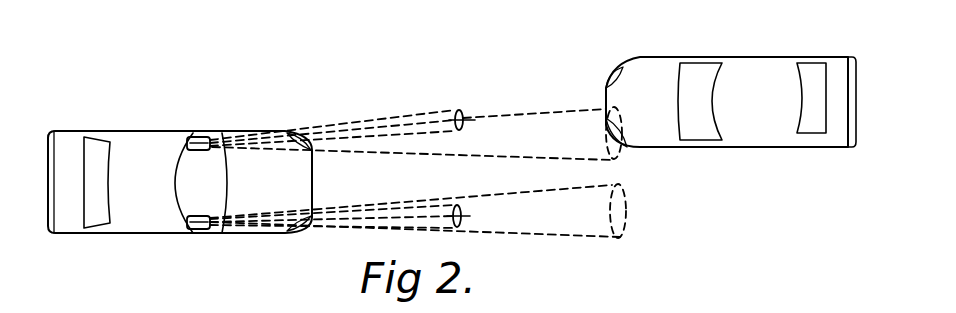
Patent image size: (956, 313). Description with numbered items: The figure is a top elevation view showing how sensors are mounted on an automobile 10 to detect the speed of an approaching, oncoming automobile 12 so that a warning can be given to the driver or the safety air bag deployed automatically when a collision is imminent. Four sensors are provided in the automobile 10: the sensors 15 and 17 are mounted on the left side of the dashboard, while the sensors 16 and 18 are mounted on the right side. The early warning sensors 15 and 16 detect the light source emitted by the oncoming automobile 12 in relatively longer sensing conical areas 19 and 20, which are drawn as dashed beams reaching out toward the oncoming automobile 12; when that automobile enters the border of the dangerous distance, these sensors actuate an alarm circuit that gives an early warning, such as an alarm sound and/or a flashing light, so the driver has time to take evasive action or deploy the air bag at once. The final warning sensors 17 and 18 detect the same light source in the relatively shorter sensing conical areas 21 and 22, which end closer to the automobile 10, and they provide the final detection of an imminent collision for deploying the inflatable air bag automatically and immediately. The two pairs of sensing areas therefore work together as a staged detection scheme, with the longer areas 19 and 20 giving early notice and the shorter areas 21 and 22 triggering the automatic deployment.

The automobile 10 is at (131, 142).
The oncoming automobile 12 is at (741, 58).
The early warning sensor 15 is at (188, 141).
The early warning sensor 16 is at (186, 229).
The final warning sensor 17 is at (194, 137).
The final warning sensor 18 is at (203, 230).
The longer sensing conical area 19 is at (552, 122).
The longer sensing conical area 20 is at (598, 234).
The shorter sensing conical area 21 is at (449, 110).
The shorter sensing conical area 22 is at (443, 227).